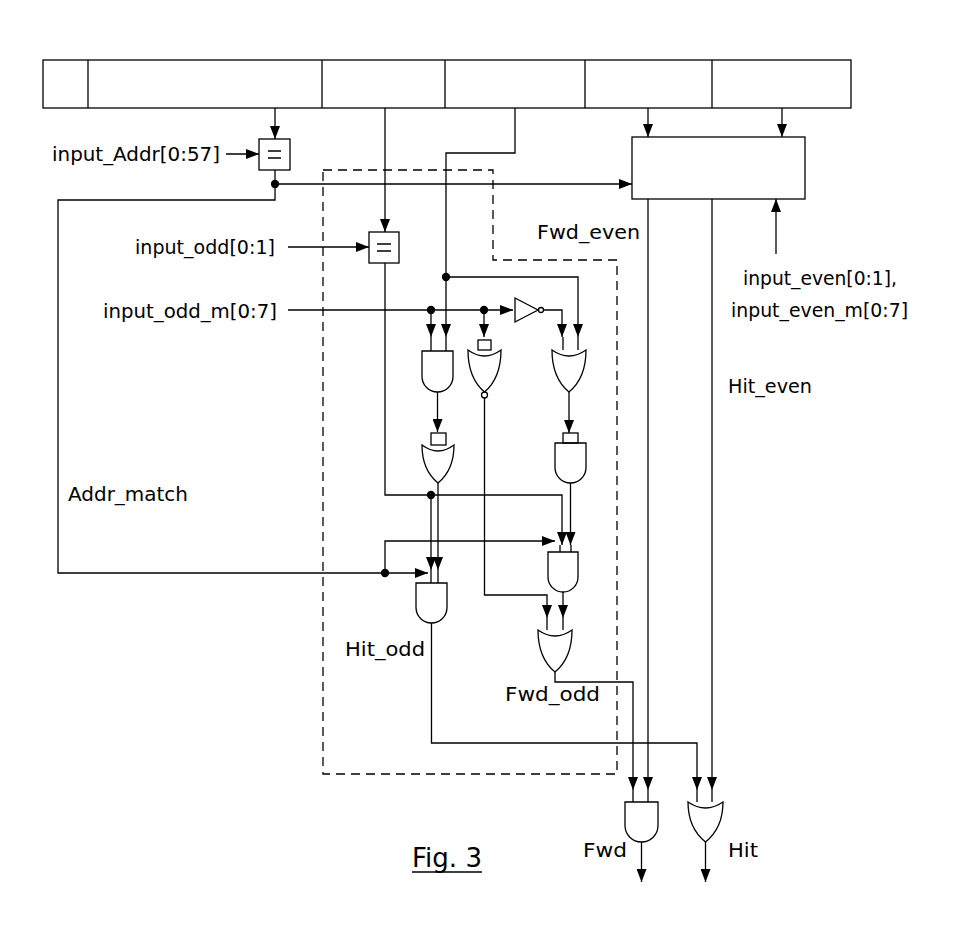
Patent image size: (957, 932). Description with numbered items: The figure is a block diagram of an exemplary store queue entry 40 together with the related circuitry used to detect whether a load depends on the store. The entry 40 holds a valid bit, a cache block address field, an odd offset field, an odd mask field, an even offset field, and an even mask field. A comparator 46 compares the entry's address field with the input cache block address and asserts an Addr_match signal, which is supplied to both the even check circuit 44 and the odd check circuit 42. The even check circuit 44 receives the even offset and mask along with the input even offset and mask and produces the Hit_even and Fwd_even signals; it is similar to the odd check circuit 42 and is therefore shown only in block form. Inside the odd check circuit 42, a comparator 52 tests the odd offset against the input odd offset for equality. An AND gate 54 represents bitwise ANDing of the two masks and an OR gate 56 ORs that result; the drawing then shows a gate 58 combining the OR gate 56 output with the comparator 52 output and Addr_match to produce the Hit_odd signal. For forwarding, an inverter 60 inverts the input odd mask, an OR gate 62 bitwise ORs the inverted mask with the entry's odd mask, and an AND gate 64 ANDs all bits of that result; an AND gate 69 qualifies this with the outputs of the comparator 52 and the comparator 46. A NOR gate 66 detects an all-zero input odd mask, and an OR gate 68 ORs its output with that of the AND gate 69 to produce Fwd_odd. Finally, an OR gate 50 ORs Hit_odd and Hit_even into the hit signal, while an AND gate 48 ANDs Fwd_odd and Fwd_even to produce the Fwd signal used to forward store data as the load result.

The store queue entry 40 is at (165, 25).
The odd check circuit 42 is at (323, 619).
The even check circuit 44 is at (731, 192).
The comparator 46 is at (290, 152).
The AND gate 48 is at (653, 830).
The OR gate 50 is at (717, 831).
The comparator 52 is at (400, 241).
The AND gate 54 is at (449, 381).
The OR gate 56 is at (450, 475).
The AND gate 58 is at (443, 611).
The inverter 60 is at (539, 305).
The OR gate 62 is at (581, 381).
The AND gate 64 is at (582, 473).
The NOR gate 66 is at (496, 381).
The OR gate 68 is at (567, 660).
The AND gate 69 is at (575, 581).